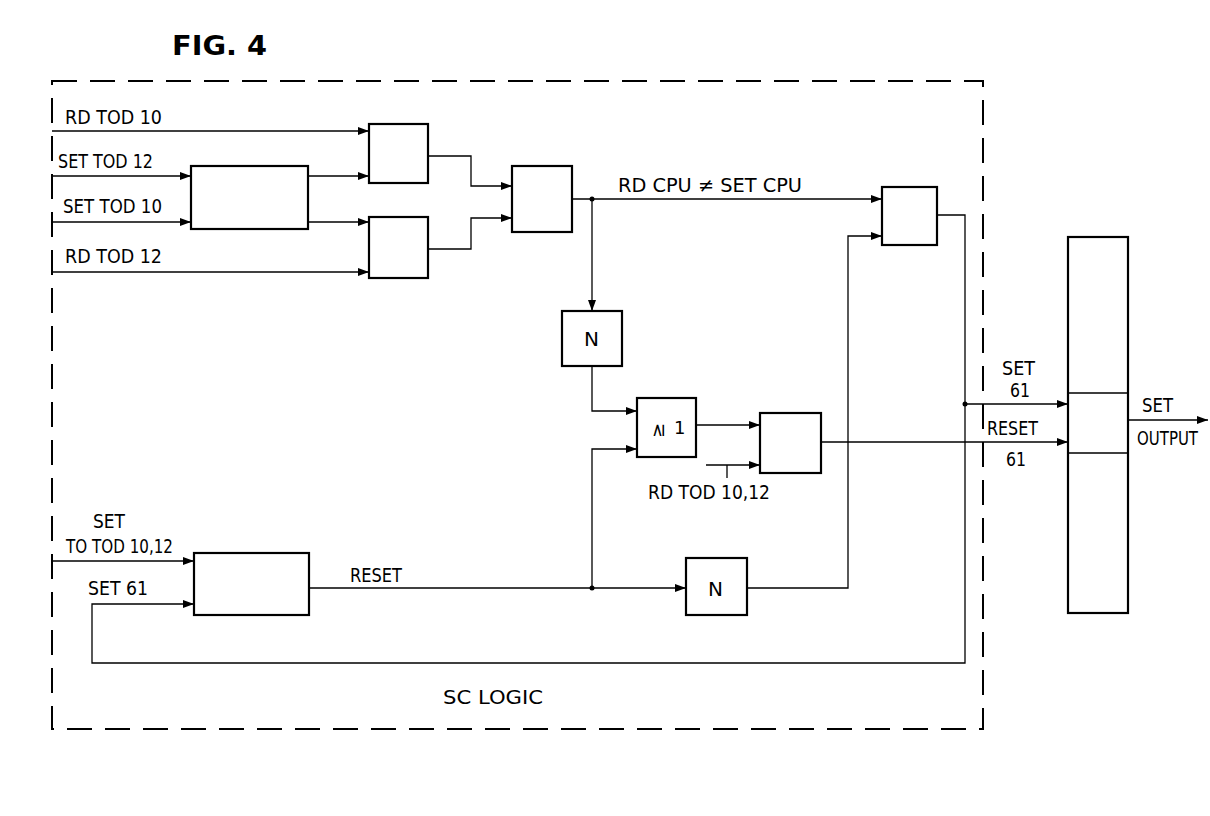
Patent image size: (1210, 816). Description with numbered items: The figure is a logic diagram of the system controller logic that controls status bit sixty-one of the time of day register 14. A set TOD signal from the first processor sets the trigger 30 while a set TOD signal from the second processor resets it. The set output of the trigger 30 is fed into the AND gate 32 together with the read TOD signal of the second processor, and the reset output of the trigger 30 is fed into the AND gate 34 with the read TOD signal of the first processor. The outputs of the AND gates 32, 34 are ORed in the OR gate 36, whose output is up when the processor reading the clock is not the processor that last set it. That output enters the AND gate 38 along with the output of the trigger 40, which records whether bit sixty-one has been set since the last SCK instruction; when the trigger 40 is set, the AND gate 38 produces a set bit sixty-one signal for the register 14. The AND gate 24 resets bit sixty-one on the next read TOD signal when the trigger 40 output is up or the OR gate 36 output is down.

The register 14 is at (1105, 237).
The AND gate 24 is at (805, 413).
The trigger 30 is at (262, 229).
The AND gate 32 is at (405, 278).
The AND gate 34 is at (417, 124).
The OR gate 36 is at (555, 166).
The AND gate 38 is at (920, 187).
The trigger 40 is at (290, 553).